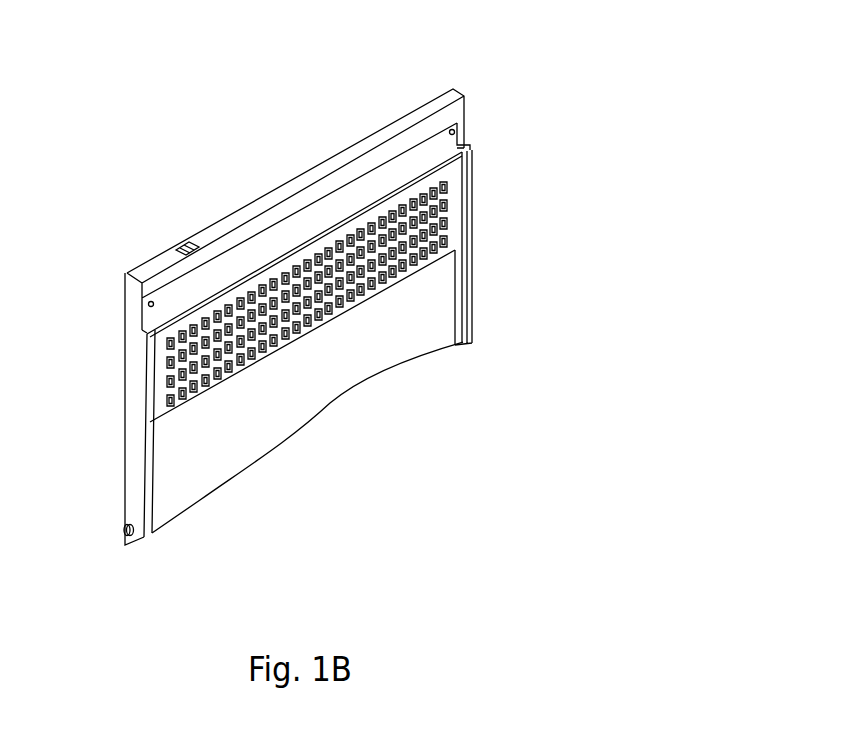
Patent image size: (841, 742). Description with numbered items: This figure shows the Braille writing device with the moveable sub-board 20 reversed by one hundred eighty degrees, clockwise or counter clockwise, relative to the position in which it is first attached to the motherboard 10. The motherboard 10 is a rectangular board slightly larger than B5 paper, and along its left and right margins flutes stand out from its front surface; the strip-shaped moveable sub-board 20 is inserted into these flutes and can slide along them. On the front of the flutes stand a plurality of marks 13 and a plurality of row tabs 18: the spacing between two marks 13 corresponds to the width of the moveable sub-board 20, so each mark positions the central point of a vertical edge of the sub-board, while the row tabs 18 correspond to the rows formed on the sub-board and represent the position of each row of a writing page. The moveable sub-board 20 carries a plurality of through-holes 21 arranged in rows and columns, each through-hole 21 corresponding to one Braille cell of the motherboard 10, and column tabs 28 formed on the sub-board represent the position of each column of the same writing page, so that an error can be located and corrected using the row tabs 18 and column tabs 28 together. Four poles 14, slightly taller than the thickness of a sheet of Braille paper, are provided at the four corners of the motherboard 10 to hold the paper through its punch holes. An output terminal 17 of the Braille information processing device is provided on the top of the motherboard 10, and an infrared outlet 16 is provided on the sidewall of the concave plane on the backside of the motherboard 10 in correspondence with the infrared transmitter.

The motherboard 10 is at (292, 166).
The marks 13 is at (152, 416).
The poles 14 is at (144, 299).
The infrared outlet 16 is at (124, 532).
The output terminal 17 is at (183, 242).
The row tabs 18 is at (146, 385).
The moveable sub-board 20 is at (358, 313).
The through-holes 21 is at (422, 256).
The column tabs 28 is at (407, 188).